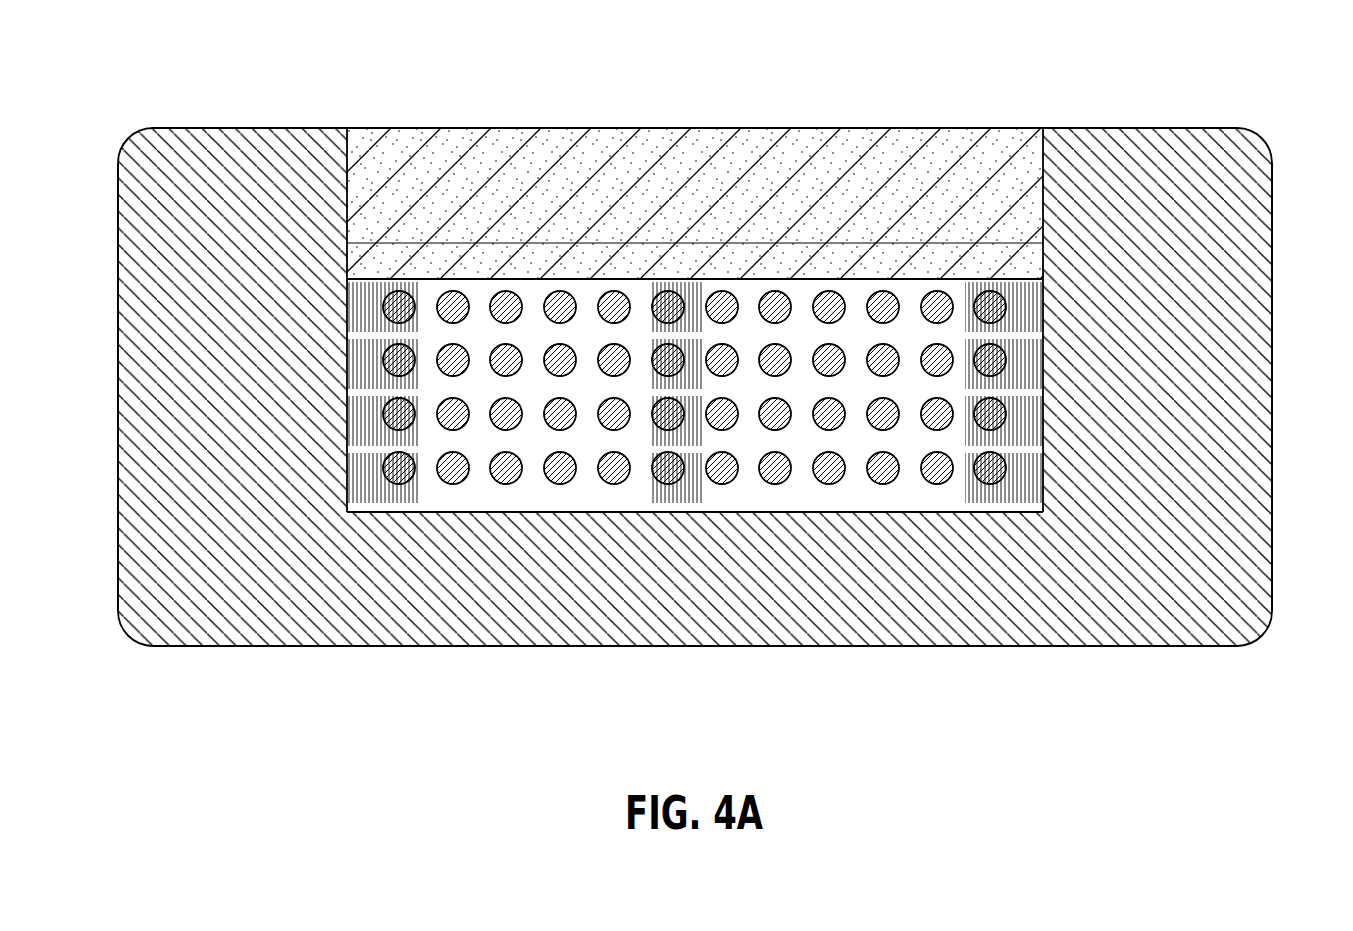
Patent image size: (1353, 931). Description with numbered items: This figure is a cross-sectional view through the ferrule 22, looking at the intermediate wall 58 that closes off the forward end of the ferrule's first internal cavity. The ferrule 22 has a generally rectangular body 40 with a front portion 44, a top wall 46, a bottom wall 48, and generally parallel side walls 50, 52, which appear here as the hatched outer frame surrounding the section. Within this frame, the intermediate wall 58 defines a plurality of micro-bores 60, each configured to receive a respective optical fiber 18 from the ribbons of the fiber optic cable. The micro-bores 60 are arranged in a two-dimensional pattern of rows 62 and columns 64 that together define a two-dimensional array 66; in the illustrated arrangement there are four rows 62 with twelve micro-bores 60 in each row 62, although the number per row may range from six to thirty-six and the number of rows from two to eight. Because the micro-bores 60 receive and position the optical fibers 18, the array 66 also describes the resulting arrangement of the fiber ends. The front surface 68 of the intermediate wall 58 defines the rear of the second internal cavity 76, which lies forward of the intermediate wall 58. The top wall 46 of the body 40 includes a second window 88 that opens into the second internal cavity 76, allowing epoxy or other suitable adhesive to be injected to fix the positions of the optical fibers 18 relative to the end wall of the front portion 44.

The ferrule 22 is at (1298, 81).
The body 40 is at (165, 118).
The front portion 44 is at (208, 122).
The top wall 46 is at (1157, 128).
The bottom wall 48 is at (210, 647).
The side wall 50 is at (1272, 543).
The side wall 52 is at (118, 521).
The intermediate wall 58 is at (304, 640).
The micro-bores 60 is at (887, 483).
The rows 62 is at (365, 307).
The columns 64 is at (452, 496).
The two-dimensional array 66 is at (481, 272).
The front surface 68 is at (802, 494).
The second internal cavity 76 is at (1043, 153).
The second window 88 is at (690, 128).
The optical fibers 18 is at (990, 485).